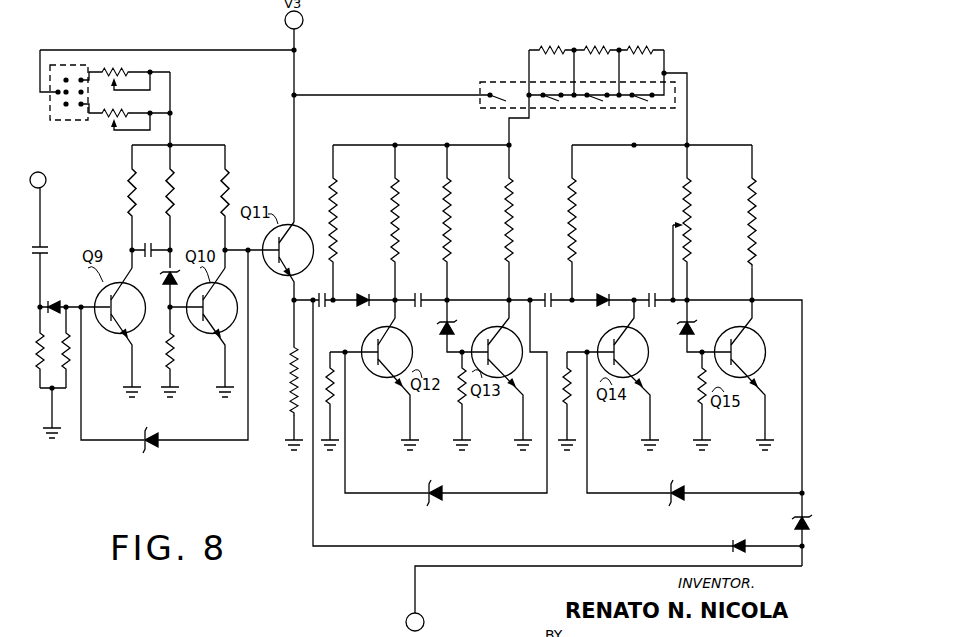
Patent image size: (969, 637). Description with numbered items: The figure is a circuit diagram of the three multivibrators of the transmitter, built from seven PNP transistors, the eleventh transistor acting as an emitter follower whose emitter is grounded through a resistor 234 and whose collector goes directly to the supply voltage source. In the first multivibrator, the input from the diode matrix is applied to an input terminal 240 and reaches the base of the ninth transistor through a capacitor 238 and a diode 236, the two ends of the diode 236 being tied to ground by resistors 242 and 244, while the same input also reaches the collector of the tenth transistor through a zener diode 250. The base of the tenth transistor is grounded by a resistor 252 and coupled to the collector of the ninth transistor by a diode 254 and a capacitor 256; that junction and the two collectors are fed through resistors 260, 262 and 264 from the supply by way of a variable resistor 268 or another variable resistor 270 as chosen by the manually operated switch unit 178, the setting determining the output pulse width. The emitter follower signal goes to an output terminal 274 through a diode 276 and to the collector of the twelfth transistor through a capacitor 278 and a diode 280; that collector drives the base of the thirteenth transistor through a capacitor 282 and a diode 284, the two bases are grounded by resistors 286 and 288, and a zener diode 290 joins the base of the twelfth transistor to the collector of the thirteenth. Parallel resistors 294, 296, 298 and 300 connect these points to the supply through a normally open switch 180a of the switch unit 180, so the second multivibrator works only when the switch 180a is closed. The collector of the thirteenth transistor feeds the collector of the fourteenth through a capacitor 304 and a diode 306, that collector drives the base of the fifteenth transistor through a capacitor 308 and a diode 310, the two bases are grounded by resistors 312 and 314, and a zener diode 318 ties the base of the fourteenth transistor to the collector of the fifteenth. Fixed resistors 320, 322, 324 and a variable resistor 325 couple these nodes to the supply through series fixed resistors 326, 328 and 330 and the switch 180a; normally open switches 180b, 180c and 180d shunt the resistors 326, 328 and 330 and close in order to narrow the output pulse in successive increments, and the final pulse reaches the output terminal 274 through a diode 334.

The manually operated switch unit 178 is at (68, 65).
The variable resistor 270 is at (128, 72).
The variable resistor 268 is at (112, 116).
The input terminal 240 is at (65, 165).
The resistor 262 is at (130, 190).
The resistor 260 is at (172, 190).
The resistor 264 is at (227, 192).
The capacitor 238 is at (48, 248).
The diode 236 is at (68, 288).
The capacitor 256 is at (146, 240).
The diode 254 is at (180, 260).
The resistor 242 is at (40, 350).
The resistor 244 is at (72, 350).
The resistor 252 is at (174, 345).
The zener diode 250 is at (158, 445).
The resistor 234 is at (290, 395).
The switch unit 180 is at (589, 98).
The normally open switch 180a is at (504, 102).
The normally open switch 180b is at (557, 103).
The normally open switch 180c is at (601, 103).
The normally open switch 180d is at (647, 101).
The fixed resistor 326 is at (552, 48).
The fixed resistor 328 is at (598, 48).
The fixed resistor 330 is at (640, 48).
The resistor 294 is at (362, 200).
The resistor 298 is at (420, 220).
The resistor 296 is at (470, 218).
The resistor 300 is at (512, 230).
The fixed resistor 324 is at (575, 235).
The fixed resistor 320 is at (684, 200).
The variable resistor 325 is at (690, 232).
The fixed resistor 322 is at (755, 228).
The capacitor 278 is at (330, 318).
The diode 280 is at (365, 292).
The capacitor 282 is at (420, 290).
The capacitor 304 is at (548, 290).
The diode 306 is at (606, 293).
The capacitor 308 is at (658, 292).
The diode 284 is at (452, 322).
The resistor 286 is at (336, 400).
The zener diode 290 is at (448, 489).
The resistor 288 is at (465, 410).
The resistor 312 is at (562, 384).
The zener diode 318 is at (680, 490).
The diode 310 is at (694, 326).
The resistor 314 is at (700, 405).
The diode 334 is at (798, 522).
The diode 276 is at (730, 542).
The output terminal 274 is at (424, 618).